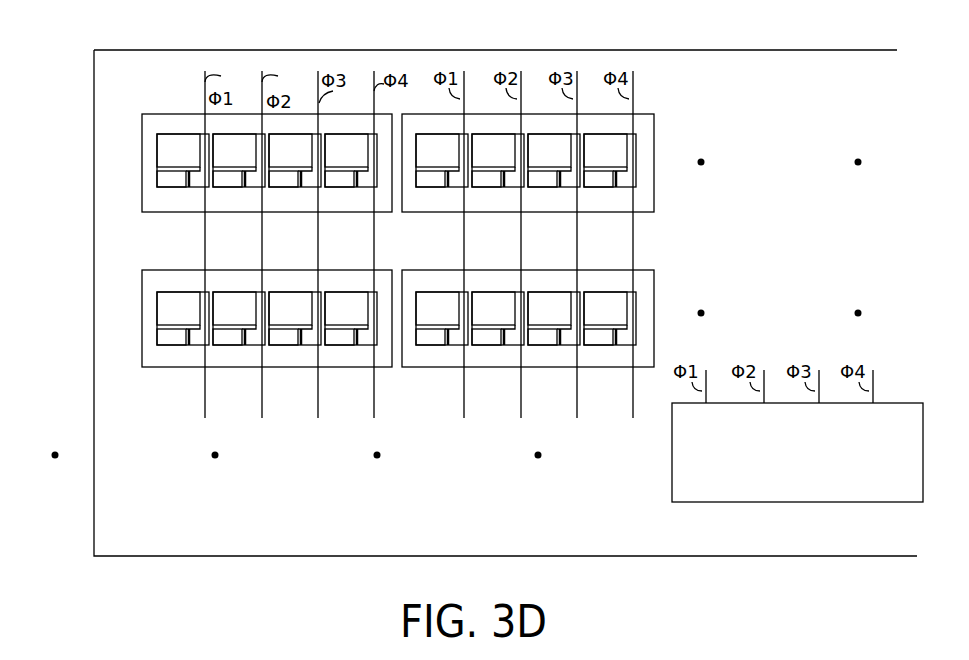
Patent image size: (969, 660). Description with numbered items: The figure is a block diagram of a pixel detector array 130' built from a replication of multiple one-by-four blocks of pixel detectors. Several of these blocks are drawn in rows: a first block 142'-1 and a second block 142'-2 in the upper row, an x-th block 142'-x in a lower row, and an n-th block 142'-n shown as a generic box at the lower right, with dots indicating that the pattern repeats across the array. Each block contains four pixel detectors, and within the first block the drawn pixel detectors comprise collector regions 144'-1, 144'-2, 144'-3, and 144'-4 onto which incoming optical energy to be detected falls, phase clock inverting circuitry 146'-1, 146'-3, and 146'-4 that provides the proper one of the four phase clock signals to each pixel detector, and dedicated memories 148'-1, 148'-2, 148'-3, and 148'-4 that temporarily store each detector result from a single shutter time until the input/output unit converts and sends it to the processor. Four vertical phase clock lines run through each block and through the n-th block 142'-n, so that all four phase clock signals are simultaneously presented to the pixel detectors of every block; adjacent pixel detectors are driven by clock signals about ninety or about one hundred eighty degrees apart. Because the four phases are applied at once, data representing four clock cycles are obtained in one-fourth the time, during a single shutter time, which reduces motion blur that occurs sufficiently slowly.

The pixel detector array 130' is at (505, 284).
The first 1×4 block of pixel detectors 142'-1 is at (228, 143).
The second 1×4 block of pixel detectors 142'-2 is at (571, 153).
The x-th 1×4 block of pixel detectors 142'-x is at (204, 323).
The n-th 1×4 block of pixel detectors 142'-n is at (797, 452).
The first collector region 144'-1 is at (154, 124).
The second collector region 144'-2 is at (218, 96).
The third collector region 144'-3 is at (282, 96).
The fourth collector region 144'-4 is at (380, 175).
The first phase clock inverting circuitry 146'-1 is at (164, 126).
The third phase clock inverting circuitry 146'-3 is at (228, 358).
The fourth phase clock inverting circuitry 146'-4 is at (396, 137).
The first pixel detector memory 148'-1 is at (140, 206).
The second pixel detector memory 148'-2 is at (190, 216).
The third pixel detector memory 148'-3 is at (308, 281).
The fourth pixel detector memory 148'-4 is at (382, 205).